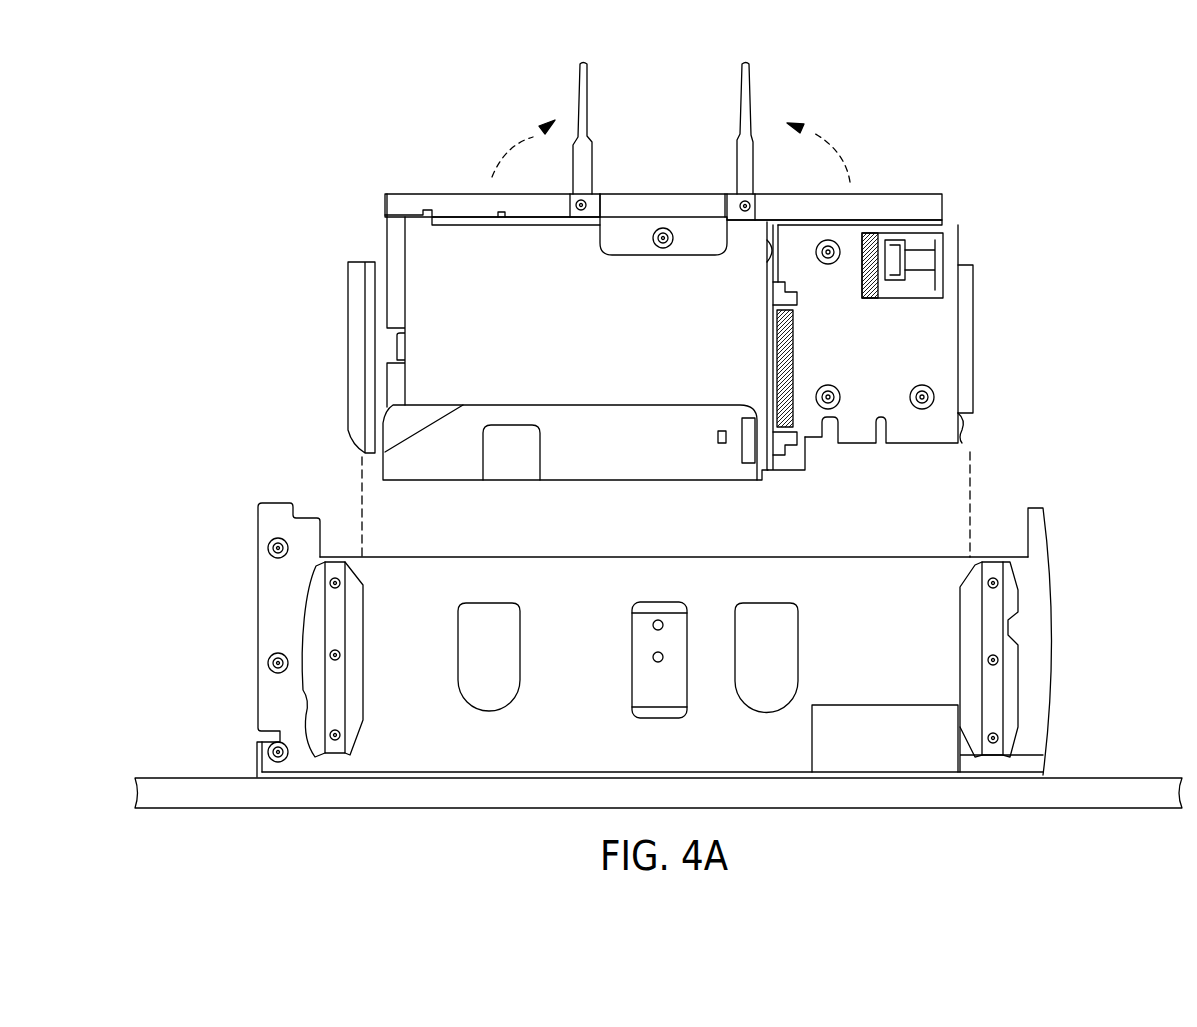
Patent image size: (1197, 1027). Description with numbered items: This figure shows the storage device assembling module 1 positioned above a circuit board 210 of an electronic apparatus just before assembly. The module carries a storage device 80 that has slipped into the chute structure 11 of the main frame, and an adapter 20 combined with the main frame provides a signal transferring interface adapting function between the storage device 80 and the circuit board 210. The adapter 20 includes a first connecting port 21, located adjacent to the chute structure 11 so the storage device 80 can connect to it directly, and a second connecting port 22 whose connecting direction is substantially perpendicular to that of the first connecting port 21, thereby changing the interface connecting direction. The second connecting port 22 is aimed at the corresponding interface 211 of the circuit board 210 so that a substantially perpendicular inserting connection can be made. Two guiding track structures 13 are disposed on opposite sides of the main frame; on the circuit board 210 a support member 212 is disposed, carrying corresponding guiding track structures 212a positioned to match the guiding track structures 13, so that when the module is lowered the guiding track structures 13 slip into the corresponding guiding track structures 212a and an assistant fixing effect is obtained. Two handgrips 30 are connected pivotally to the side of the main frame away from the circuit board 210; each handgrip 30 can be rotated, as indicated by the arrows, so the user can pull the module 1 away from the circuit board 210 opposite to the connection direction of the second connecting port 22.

The storage device assembling module 1 is at (1077, 135).
The chute structure 11 is at (643, 435).
The guiding track structure 13 is at (357, 301).
The adapter 20 is at (930, 354).
The first connecting port 21 is at (791, 341).
The second connecting port 22 is at (911, 430).
The handgrip 30 is at (583, 110).
The storage device 80 is at (438, 262).
The circuit board 210 is at (1107, 798).
The corresponding interface 211 is at (878, 733).
The support member 212 is at (1038, 587).
The corresponding guiding track structure 212a is at (337, 630).